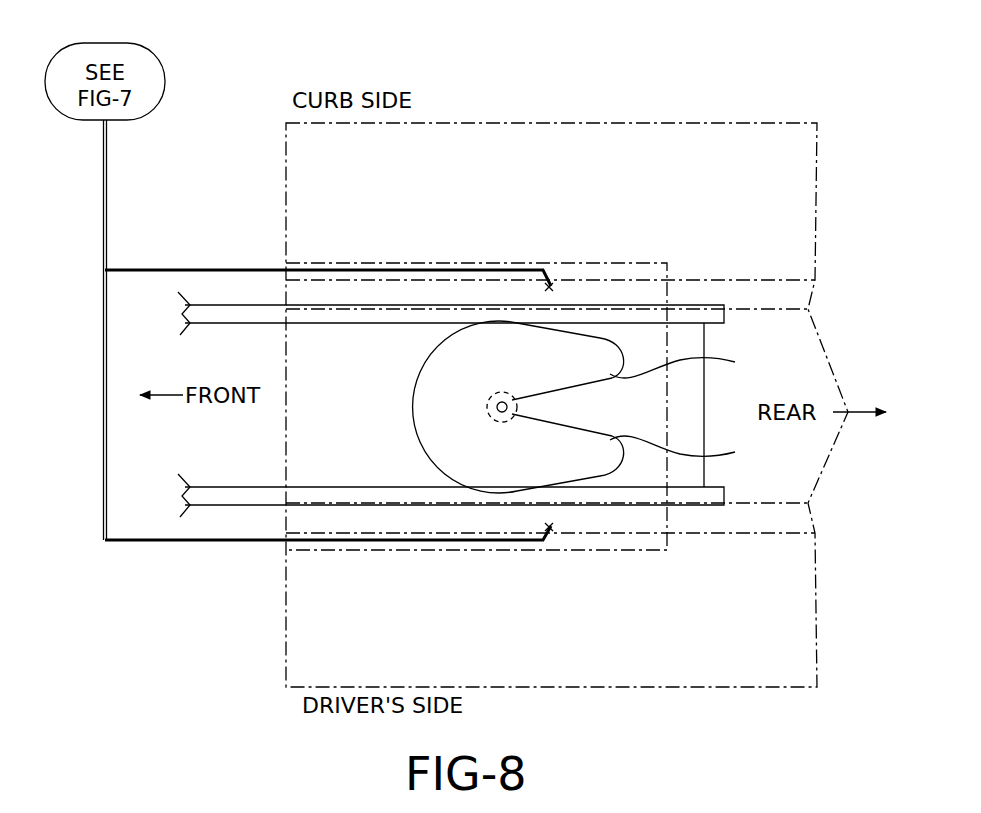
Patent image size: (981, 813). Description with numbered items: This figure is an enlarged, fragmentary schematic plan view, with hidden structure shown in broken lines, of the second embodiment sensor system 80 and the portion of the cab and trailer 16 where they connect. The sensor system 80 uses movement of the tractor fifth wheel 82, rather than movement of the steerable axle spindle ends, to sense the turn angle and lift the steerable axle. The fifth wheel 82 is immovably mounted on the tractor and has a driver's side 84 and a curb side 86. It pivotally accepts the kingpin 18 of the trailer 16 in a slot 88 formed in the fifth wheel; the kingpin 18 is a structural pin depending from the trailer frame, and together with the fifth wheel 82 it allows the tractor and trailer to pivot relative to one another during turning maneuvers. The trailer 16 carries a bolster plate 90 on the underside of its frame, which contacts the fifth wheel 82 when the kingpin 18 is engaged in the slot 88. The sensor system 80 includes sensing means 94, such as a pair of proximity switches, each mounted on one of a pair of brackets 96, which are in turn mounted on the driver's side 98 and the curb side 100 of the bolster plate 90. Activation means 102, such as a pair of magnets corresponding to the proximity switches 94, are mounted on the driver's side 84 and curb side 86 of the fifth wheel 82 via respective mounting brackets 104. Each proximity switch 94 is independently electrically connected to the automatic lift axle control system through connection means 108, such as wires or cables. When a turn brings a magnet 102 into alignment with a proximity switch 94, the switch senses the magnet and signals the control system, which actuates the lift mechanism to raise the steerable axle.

The trailer 16 is at (279, 643).
The kingpin 18 is at (495, 405).
The second embodiment sensor system 80 is at (259, 97).
The tractor fifth wheel 82 is at (416, 445).
The driver's side of fifth wheel 84 is at (573, 478).
The curb side of fifth wheel 86 is at (575, 328).
The slot 88 is at (563, 392).
The bolster plate 90 is at (676, 256).
The sensing means 94 is at (551, 287).
The brackets 96 is at (546, 287).
The driver's side of bolster plate 98 is at (350, 550).
The curb side of bolster plate 100 is at (348, 265).
The activation means 102 is at (600, 337).
The mounting brackets 104 is at (694, 407).
The connection means 108 is at (143, 270).